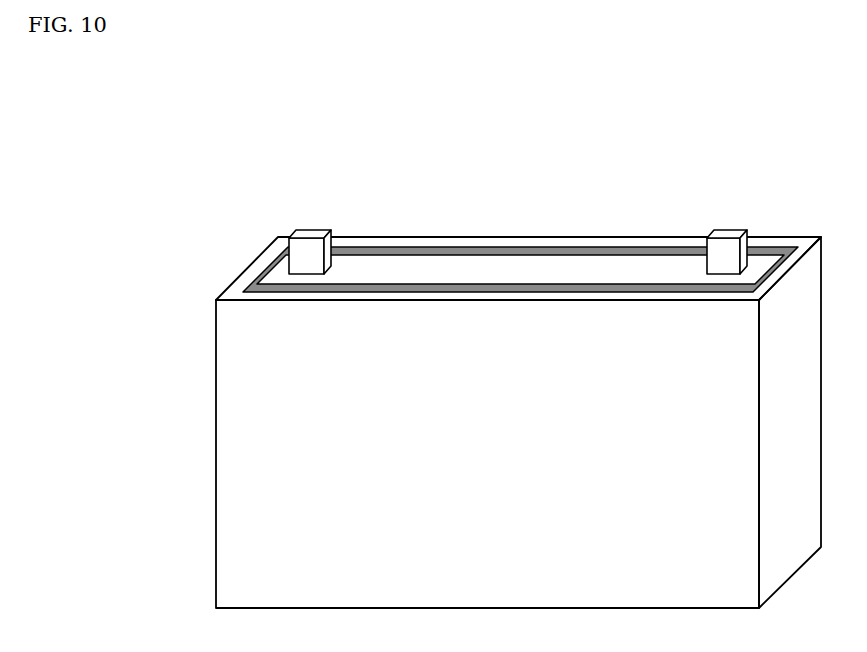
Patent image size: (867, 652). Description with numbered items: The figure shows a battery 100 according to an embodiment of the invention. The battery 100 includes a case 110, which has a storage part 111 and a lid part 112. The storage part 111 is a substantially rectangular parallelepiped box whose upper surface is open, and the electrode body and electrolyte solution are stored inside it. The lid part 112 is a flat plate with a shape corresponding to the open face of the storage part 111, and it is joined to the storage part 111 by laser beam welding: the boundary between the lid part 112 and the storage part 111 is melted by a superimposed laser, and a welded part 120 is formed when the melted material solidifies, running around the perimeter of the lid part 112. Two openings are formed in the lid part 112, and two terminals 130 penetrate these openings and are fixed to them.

The battery 100 is at (477, 350).
The case 110 is at (477, 399).
The storage part 111 is at (233, 450).
The lid part 112 is at (528, 267).
The welded part 120 is at (444, 251).
The terminals 130 is at (310, 233).